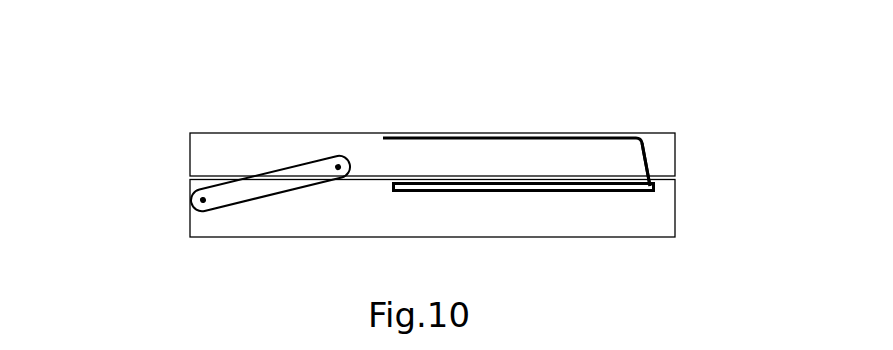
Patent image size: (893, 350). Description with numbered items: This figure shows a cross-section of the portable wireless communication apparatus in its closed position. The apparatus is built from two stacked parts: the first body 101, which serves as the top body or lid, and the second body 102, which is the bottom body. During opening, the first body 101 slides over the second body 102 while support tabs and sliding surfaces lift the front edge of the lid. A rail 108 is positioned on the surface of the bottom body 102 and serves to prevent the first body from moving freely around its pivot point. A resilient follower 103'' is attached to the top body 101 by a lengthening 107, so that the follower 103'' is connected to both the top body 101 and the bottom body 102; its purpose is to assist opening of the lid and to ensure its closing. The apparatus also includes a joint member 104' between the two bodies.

The first body 101 is at (213, 145).
The second body 102 is at (305, 223).
The resilient follower 103'' is at (705, 157).
The joint member 104' is at (198, 184).
The lengthening 107 is at (477, 135).
The rail 108 is at (527, 185).